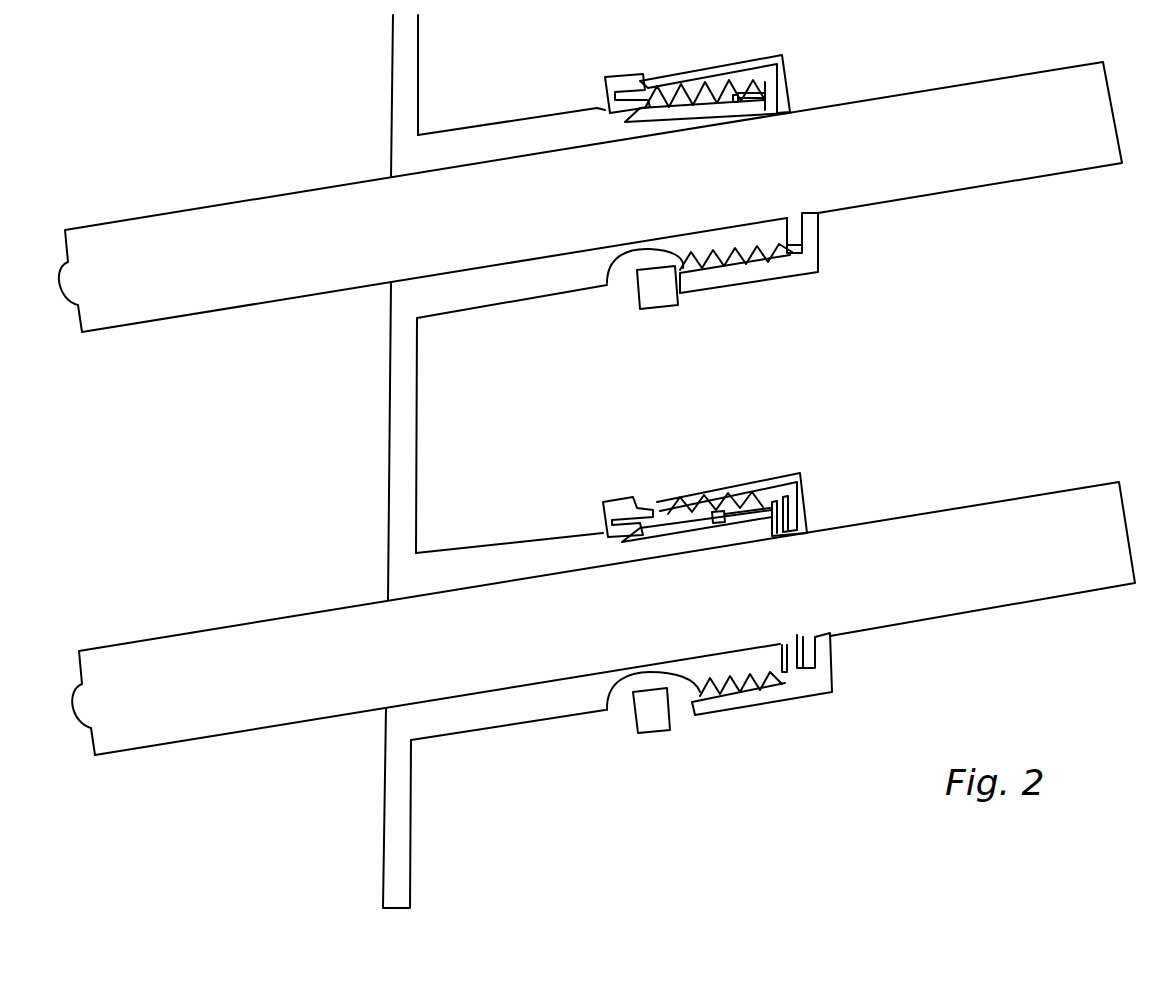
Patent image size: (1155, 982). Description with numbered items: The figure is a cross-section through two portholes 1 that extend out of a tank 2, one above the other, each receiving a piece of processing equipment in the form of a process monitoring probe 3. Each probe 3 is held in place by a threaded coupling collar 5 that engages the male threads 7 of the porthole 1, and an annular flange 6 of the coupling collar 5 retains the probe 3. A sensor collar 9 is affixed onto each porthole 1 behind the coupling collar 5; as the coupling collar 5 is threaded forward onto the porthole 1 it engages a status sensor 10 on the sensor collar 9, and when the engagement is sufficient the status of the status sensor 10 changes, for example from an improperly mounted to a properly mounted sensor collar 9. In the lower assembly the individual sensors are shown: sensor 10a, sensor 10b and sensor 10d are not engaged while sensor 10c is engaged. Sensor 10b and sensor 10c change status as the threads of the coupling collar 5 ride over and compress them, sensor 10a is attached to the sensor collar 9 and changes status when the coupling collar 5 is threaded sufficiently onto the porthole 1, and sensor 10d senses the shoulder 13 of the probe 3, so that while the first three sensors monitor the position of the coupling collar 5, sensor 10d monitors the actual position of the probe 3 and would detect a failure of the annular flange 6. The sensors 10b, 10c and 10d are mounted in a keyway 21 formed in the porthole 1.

The porthole 1 is at (477, 143).
The tank 2 is at (392, 836).
The process monitoring probe 3 is at (903, 178).
The threaded coupling collar 5 is at (815, 268).
The annular flange 6 is at (835, 652).
The male threads 7 is at (607, 283).
The sensor collar 9 is at (670, 303).
The status sensor 10 is at (630, 88).
The sensor 10a is at (638, 498).
The sensor 10b is at (670, 502).
The sensor 10c is at (715, 500).
The sensor 10d is at (777, 496).
The shoulder 13 is at (792, 517).
The keyway 21 is at (653, 112).